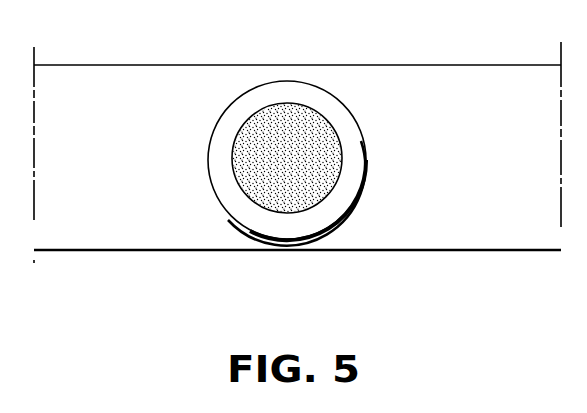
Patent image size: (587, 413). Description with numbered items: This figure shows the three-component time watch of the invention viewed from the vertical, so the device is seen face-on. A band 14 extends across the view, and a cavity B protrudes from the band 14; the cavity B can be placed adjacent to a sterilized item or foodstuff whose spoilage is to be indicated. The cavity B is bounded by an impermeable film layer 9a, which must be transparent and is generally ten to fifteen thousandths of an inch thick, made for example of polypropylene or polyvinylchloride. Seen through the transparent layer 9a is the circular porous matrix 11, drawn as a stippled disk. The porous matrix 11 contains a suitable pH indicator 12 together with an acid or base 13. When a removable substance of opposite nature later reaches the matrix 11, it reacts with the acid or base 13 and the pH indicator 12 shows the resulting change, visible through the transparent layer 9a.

The impermeable film layer 9a is at (335, 110).
The porous matrix 11 is at (282, 103).
The pH indicator 12 is at (256, 117).
The acid or base 13 is at (305, 112).
The band 14 is at (453, 93).
The cavity B is at (196, 133).